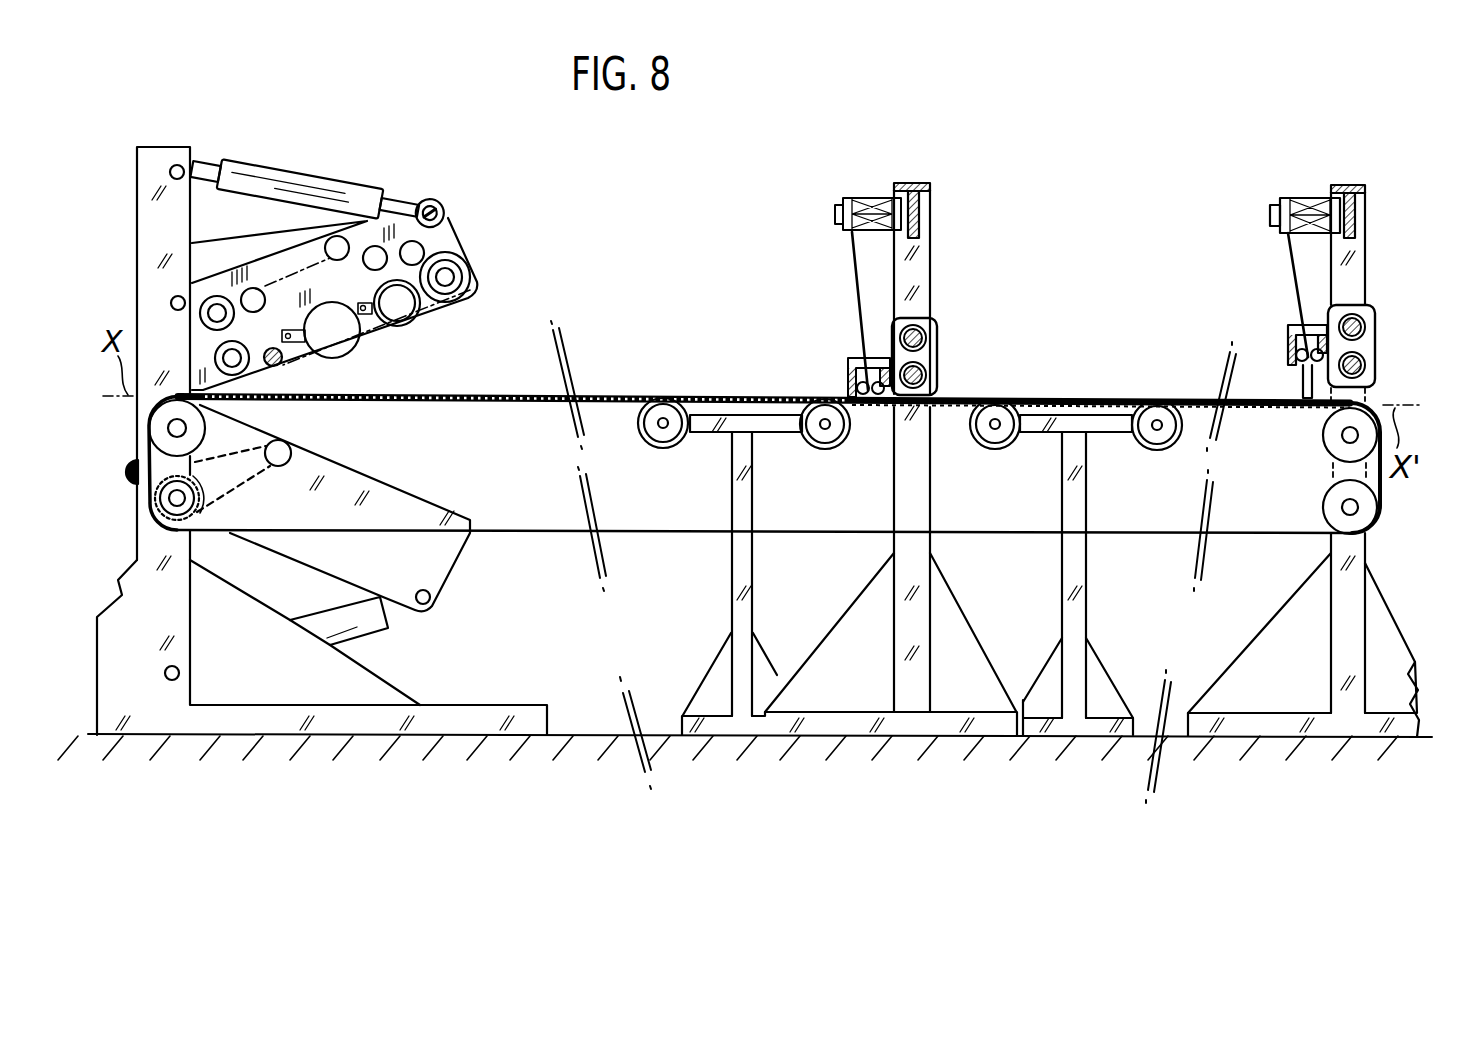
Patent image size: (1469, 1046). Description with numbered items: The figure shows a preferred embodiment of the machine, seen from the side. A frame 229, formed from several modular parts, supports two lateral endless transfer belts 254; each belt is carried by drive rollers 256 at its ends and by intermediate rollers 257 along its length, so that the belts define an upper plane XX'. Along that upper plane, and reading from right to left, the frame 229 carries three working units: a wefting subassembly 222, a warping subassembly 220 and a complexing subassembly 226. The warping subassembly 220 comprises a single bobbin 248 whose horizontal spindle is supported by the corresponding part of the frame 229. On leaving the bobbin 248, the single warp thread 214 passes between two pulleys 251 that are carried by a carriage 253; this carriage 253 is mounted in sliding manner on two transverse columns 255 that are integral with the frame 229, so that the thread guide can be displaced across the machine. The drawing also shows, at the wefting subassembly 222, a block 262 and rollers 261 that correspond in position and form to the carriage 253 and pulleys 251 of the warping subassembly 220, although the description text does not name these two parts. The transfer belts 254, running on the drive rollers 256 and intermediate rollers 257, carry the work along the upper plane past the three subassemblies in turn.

The warp thread 214 is at (852, 270).
The warping subassembly 220 is at (843, 180).
The wefting subassembly 222 is at (1310, 178).
The complexing subassembly 226 is at (418, 176).
The frame 229 is at (383, 710).
The bobbin 248 is at (880, 195).
The pulleys 251 is at (850, 366).
The carriage 253 is at (935, 322).
The transfer belts 254 is at (553, 540).
The transverse columns 255 is at (928, 372).
The drive rollers 256 is at (150, 500).
The intermediate rollers 257 is at (815, 440).
The guide rollers 261 is at (1362, 356).
The roller block 262 is at (1360, 305).